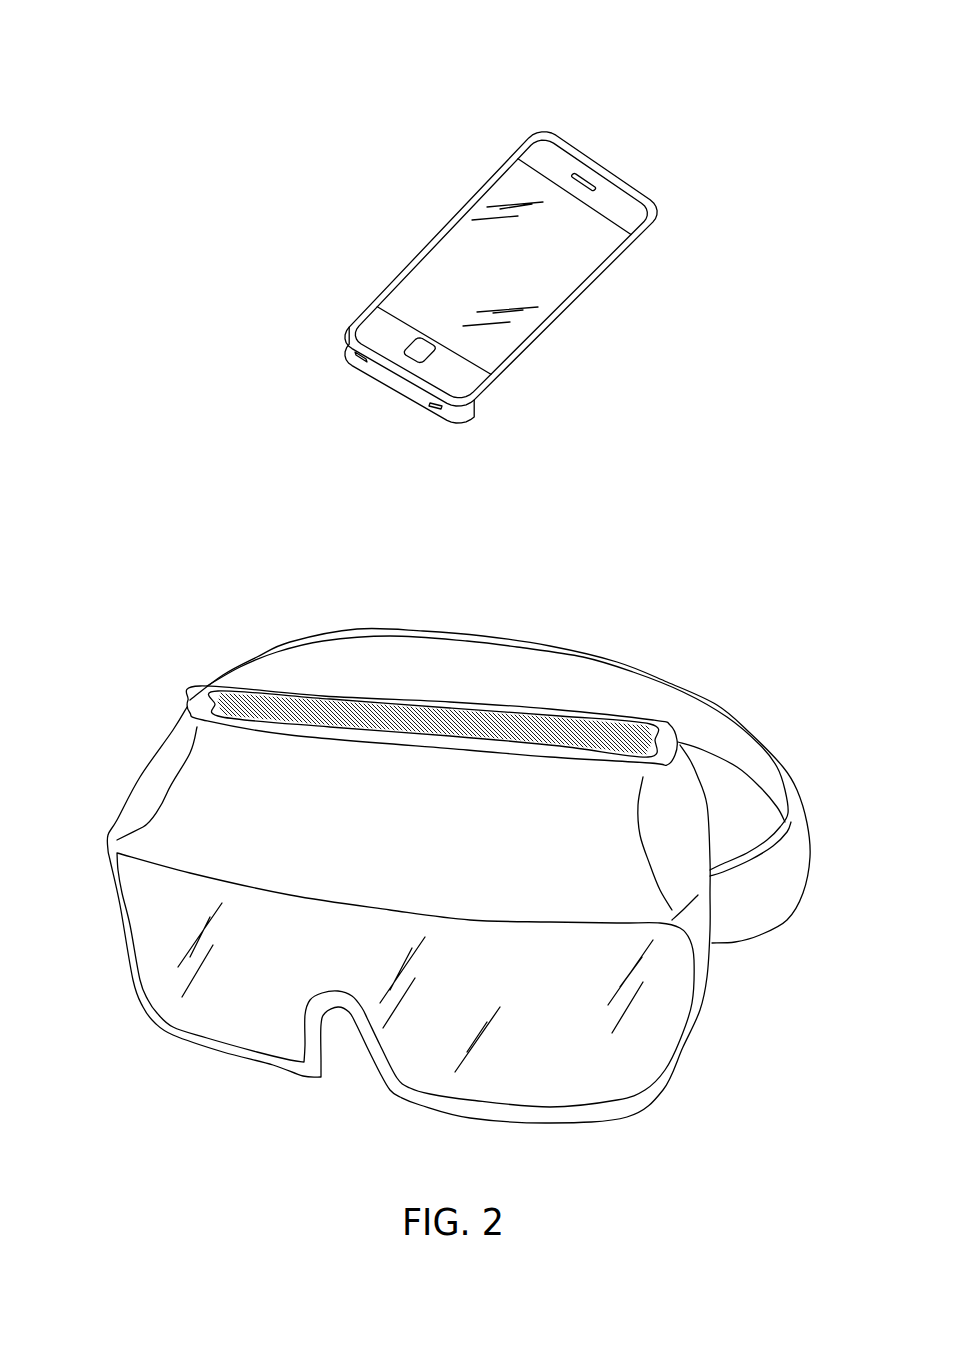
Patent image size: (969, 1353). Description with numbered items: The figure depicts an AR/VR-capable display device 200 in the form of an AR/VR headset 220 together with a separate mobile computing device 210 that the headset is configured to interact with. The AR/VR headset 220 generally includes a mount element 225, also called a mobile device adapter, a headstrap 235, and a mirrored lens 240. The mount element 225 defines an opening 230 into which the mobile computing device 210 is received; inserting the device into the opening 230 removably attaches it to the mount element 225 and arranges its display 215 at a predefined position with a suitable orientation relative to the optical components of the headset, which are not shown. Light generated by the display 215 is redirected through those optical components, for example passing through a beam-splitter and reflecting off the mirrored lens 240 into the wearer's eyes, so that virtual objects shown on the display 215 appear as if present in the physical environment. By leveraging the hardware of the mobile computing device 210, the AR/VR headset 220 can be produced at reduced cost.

The AR/VR-capable display device 200 is at (707, 50).
The mobile computing device 210 is at (620, 173).
The display 215 is at (445, 267).
The AR/VR headset 220 is at (135, 647).
The mount element 225 is at (130, 803).
The opening 230 is at (460, 717).
The headstrap 235 is at (787, 870).
The mirrored lens 240 is at (613, 1068).